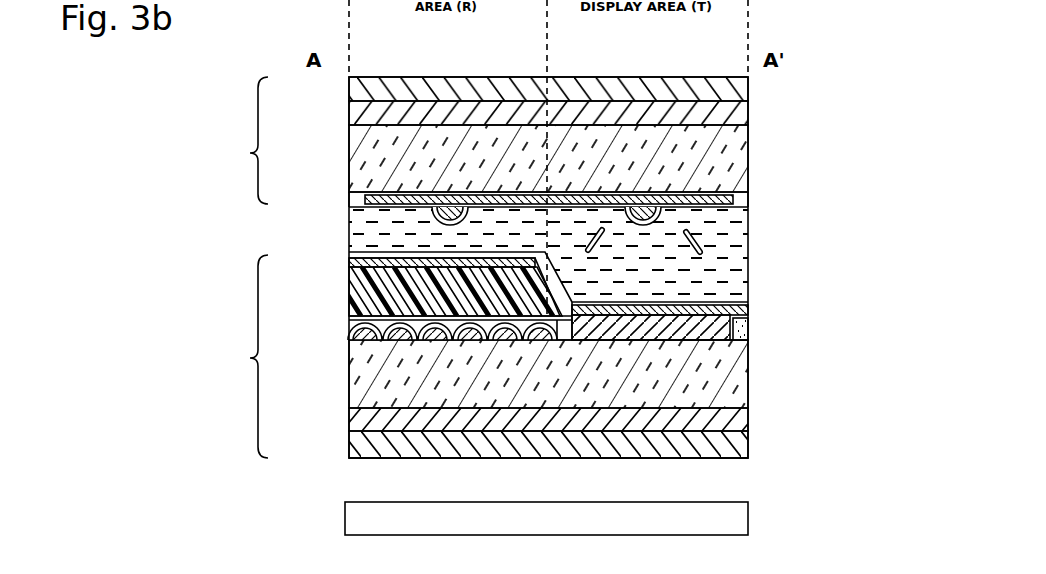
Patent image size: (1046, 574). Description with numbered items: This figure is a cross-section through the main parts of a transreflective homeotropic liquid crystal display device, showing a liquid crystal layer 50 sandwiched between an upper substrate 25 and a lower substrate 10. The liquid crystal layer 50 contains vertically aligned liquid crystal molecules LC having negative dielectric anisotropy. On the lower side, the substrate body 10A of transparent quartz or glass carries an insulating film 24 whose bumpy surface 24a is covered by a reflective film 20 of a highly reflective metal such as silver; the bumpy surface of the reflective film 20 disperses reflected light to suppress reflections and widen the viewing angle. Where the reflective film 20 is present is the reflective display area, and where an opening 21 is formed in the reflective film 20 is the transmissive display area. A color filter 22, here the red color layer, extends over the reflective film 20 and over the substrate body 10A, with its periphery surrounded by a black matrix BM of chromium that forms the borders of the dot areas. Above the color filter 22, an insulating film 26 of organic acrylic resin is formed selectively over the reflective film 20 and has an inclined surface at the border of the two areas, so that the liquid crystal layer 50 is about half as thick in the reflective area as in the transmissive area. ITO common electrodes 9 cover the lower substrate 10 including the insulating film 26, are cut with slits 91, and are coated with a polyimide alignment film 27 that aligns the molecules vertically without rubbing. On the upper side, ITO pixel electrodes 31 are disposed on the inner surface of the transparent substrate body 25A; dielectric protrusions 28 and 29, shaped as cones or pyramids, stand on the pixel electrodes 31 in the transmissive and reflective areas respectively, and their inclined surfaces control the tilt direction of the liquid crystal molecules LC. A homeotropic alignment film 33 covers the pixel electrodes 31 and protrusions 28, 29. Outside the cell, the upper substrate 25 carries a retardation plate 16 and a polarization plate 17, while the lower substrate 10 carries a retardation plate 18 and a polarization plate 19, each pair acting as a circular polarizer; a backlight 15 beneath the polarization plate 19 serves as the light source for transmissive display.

The polarization plate 17 is at (748, 82).
The retardation plate 16 is at (748, 113).
The substrate body 25A is at (748, 145).
The pixel electrodes 31 is at (748, 185).
The homeotropic alignment film 33 is at (733, 207).
The upper substrate 25 is at (241, 140).
The liquid crystal molecules LC is at (697, 243).
The protrusion 29 is at (432, 222).
The protrusion 28 is at (643, 225).
The liquid crystal layer 50 is at (740, 278).
The alignment film 27 is at (349, 253).
The insulating film 26 is at (349, 282).
The black matrix BM is at (349, 318).
The reflective film 20 is at (349, 326).
The bumpy surface 24a is at (358, 348).
The common electrodes 9 is at (748, 317).
The color filter 22 is at (748, 378).
The substrate body 10A is at (748, 383).
The retardation plate 18 is at (748, 420).
The polarization plate 19 is at (748, 442).
The lower substrate 10 is at (241, 356).
The backlight 15 is at (735, 515).
The insulating film 24 is at (500, 342).
The opening 21 is at (563, 330).
The slits 91 is at (572, 318).